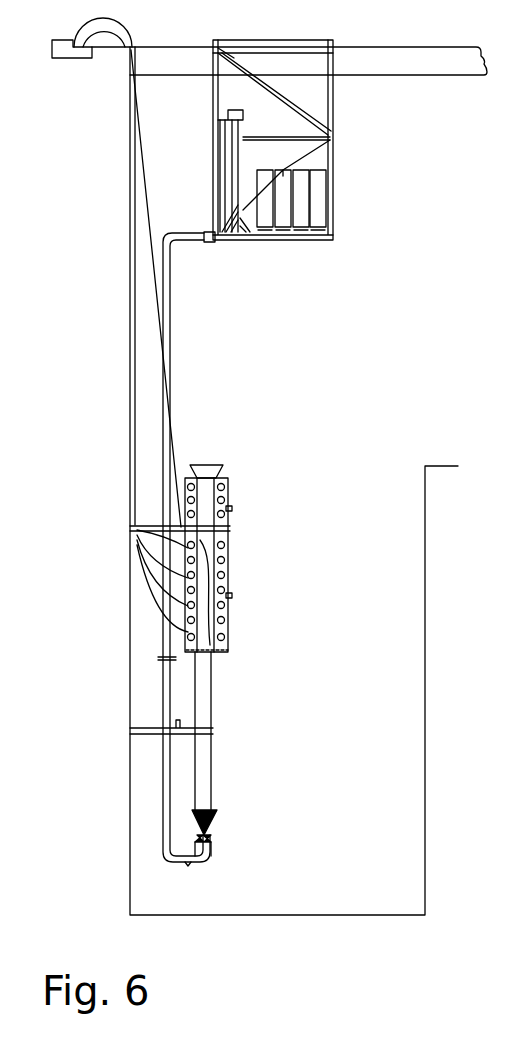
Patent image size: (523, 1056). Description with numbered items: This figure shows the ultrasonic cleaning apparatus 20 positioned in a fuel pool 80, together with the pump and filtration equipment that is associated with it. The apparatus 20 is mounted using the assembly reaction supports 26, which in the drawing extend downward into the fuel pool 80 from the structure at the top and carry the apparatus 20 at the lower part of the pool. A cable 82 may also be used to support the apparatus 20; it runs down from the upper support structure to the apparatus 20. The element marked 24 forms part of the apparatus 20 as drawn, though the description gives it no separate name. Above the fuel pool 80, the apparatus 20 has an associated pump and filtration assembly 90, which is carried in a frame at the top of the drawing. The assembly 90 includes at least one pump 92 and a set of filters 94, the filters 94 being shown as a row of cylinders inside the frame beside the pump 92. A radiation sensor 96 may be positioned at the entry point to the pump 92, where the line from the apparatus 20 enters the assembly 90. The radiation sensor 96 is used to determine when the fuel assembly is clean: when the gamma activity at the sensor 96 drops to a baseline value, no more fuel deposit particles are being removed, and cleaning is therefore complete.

The ultrasonic cleaning apparatus 20 is at (225, 660).
The pump and strainer assembly 24 is at (228, 597).
The assembly reaction supports 26 is at (135, 528).
The fuel pool 80 is at (357, 742).
The cable 82 is at (140, 142).
The pump and filtration assembly 90 is at (348, 244).
The pump 92 is at (222, 150).
The filters 94 is at (333, 159).
The radiation sensor 96 is at (210, 242).